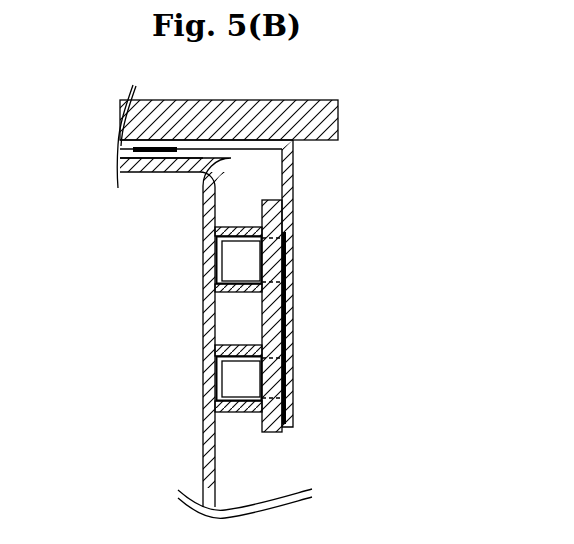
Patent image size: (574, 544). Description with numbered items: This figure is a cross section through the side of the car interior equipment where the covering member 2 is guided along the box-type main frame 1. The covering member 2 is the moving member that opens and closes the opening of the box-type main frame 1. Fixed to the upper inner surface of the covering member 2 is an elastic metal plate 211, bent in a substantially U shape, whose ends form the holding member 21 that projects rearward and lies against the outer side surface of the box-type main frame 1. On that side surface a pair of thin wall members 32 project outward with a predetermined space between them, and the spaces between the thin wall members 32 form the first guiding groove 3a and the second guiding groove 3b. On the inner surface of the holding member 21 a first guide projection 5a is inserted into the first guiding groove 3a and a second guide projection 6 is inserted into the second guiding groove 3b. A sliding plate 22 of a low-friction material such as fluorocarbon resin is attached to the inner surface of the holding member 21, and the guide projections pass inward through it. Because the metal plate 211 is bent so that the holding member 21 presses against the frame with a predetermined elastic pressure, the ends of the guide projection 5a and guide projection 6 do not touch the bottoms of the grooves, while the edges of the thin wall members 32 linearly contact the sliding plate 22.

The box-type main frame 1 is at (218, 452).
The covering member 2 is at (318, 126).
The holding member 21 is at (293, 278).
The elastic metal plate 211 is at (263, 147).
The sliding plate 22 is at (287, 312).
The thin wall member 32 is at (243, 224).
The first guiding groove 3a is at (211, 257).
The second guiding groove 3b is at (210, 368).
The first guide projection 5a is at (233, 267).
The second guide projection 6 is at (228, 379).